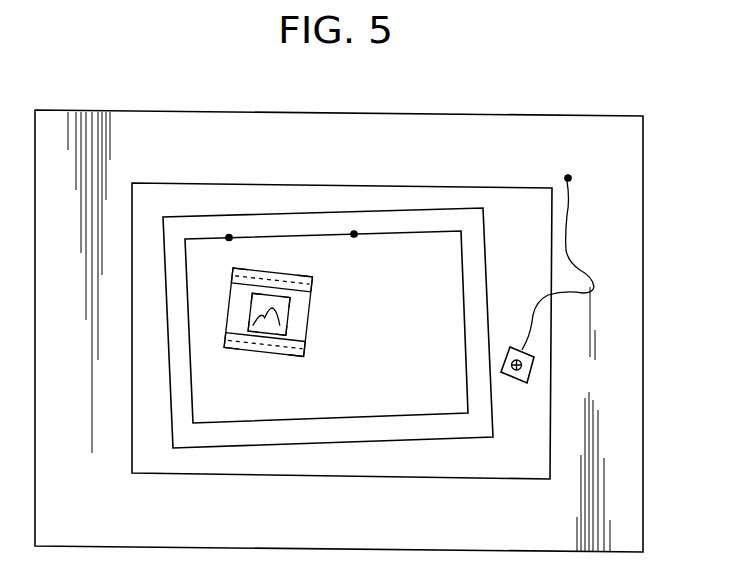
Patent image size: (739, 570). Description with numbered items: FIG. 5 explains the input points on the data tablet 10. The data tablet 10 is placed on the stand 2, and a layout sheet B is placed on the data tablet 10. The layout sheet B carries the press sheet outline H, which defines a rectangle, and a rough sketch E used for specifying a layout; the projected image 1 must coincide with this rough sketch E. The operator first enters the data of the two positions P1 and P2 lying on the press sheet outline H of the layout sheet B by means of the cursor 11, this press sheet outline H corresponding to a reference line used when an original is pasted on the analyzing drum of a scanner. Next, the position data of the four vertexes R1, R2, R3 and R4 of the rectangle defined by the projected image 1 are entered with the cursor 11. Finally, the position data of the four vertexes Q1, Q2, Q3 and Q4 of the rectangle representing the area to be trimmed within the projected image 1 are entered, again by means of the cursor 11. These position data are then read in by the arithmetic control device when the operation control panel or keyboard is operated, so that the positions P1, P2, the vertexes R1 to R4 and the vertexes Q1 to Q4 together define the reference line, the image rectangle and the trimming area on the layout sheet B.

The stand 2 is at (68, 135).
The data tablet 10 is at (171, 194).
The layout sheet B is at (428, 243).
The press sheet outline H is at (455, 229).
The position P1 is at (229, 236).
The position P2 is at (354, 232).
The projected image 1 is at (302, 322).
The rough sketch E is at (273, 302).
The vertex R1 is at (226, 265).
The vertex R2 is at (324, 279).
The vertex R3 is at (312, 364).
The vertex R4 is at (219, 357).
The vertex Q1 is at (246, 294).
The vertex Q2 is at (293, 293).
The vertex Q3 is at (285, 343).
The vertex Q4 is at (252, 340).
The cursor 11 is at (530, 371).